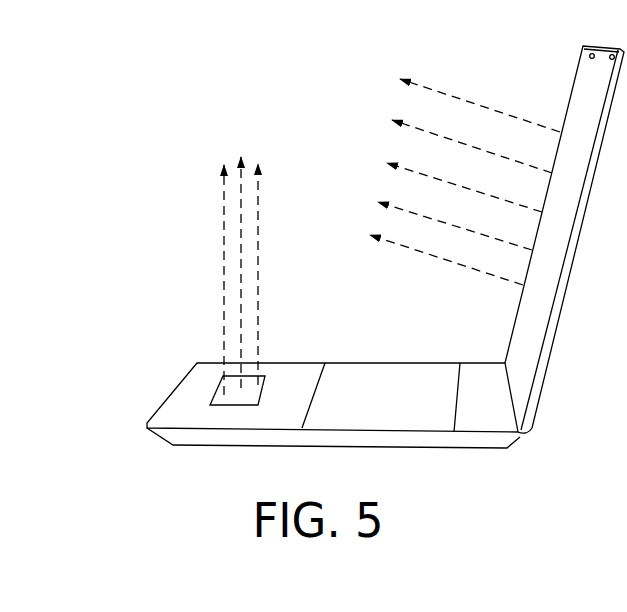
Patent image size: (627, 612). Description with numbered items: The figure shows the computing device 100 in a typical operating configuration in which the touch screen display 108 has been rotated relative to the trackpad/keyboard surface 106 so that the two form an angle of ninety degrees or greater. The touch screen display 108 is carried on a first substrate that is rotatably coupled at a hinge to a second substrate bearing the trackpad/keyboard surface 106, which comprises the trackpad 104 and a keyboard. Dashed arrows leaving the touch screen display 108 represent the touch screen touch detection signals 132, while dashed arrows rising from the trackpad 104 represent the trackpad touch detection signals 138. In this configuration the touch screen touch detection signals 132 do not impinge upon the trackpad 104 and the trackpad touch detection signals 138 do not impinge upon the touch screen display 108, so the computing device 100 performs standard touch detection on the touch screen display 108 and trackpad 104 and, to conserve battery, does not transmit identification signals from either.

The computing device 100 is at (284, 130).
The trackpad 104 is at (221, 395).
The trackpad/keyboard surface 106 is at (182, 420).
The touch screen display 108 is at (587, 88).
The touch screen touch detection signals 132 is at (422, 130).
The trackpad touch detection signals 138 is at (242, 262).